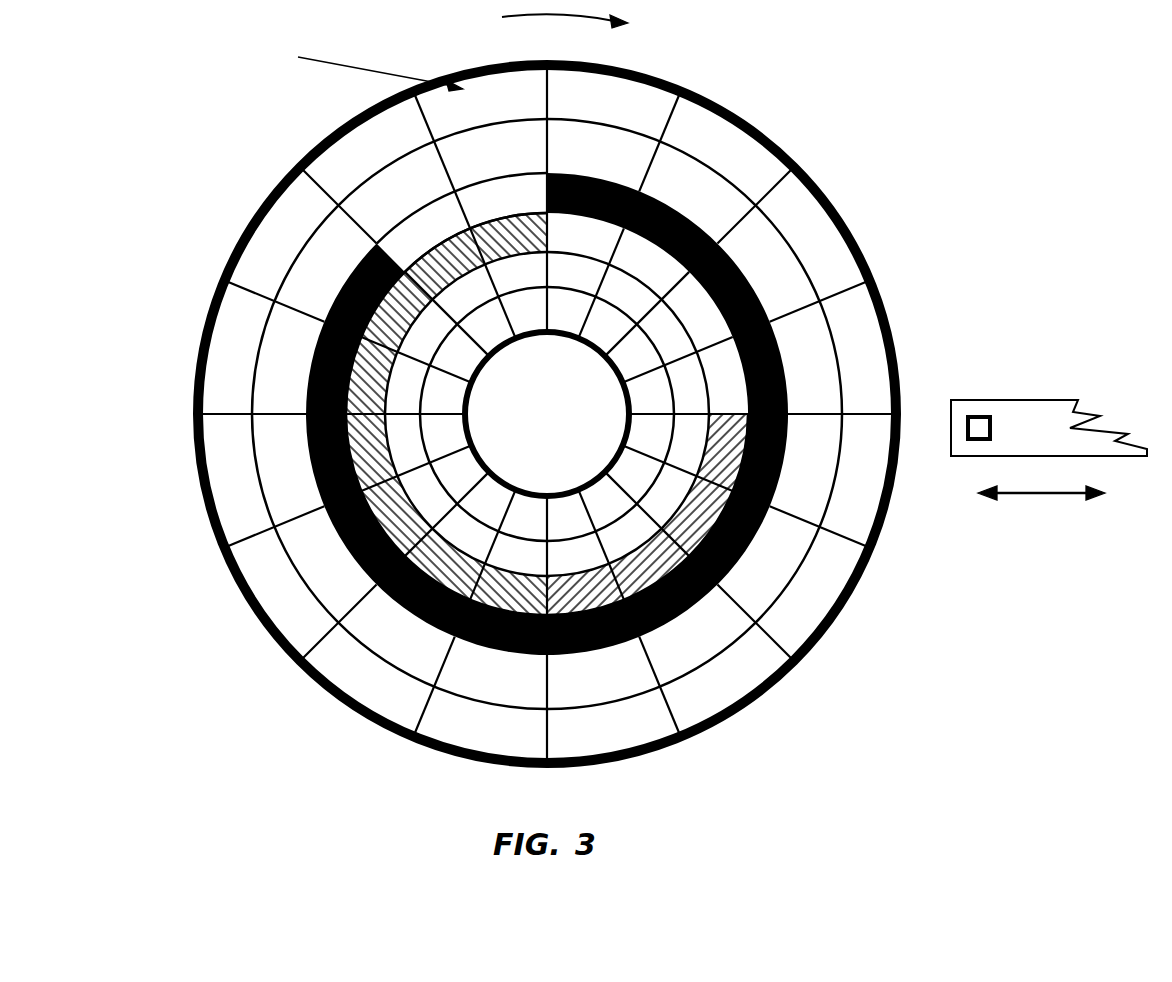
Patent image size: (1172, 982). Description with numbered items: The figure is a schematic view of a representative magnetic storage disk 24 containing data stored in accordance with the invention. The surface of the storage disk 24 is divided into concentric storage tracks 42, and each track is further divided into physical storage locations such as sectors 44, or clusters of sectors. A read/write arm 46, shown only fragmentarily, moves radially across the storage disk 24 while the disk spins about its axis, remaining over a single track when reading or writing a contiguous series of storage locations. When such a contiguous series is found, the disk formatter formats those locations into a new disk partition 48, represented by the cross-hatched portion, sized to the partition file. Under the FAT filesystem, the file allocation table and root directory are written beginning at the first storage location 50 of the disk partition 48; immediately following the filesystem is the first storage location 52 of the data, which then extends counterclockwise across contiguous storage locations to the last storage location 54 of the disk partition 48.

The storage disk 24 is at (587, 388).
The storage tracks 42 is at (740, 685).
The sectors 44 is at (362, 620).
The read/write arm 46 is at (1042, 400).
The disk partition 48 is at (750, 550).
The first storage location of the disk partition 50 is at (337, 288).
The first storage location of the data 52 is at (307, 380).
The last storage location of the disk partition 54 is at (733, 427).